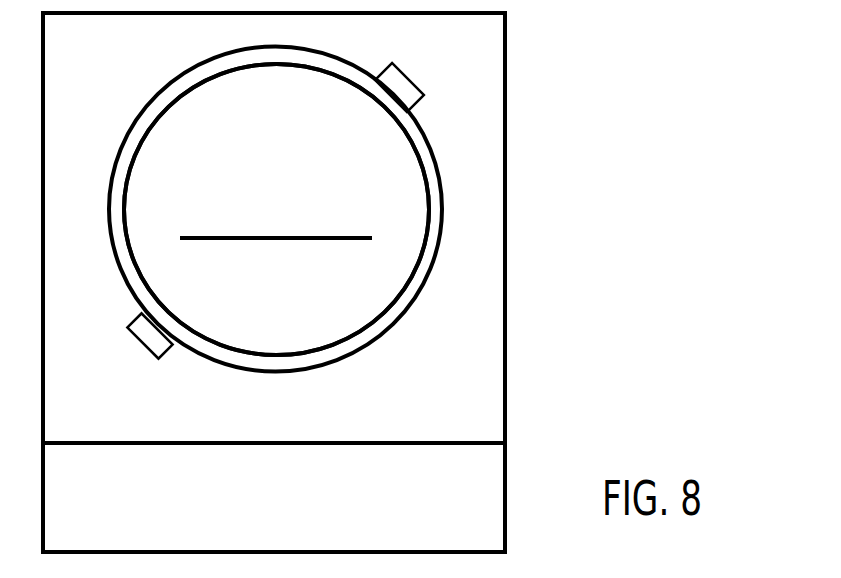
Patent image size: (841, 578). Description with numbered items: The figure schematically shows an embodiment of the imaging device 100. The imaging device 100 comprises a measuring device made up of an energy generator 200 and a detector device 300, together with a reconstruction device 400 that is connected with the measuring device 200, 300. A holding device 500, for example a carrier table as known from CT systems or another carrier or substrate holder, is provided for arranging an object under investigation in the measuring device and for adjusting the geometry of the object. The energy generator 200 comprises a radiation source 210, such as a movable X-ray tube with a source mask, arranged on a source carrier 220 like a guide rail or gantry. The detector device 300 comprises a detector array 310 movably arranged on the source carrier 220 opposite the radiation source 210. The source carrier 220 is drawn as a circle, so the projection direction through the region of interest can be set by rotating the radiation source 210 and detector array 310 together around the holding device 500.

The imaging device 100 is at (572, 58).
The energy generator 200 is at (663, 302).
The detector device 300 is at (276, 209).
The radiation source 210 is at (410, 88).
The source carrier 220 is at (355, 348).
The detector array 310 is at (152, 340).
The reconstruction device 400 is at (493, 483).
The holding device 500 is at (323, 240).